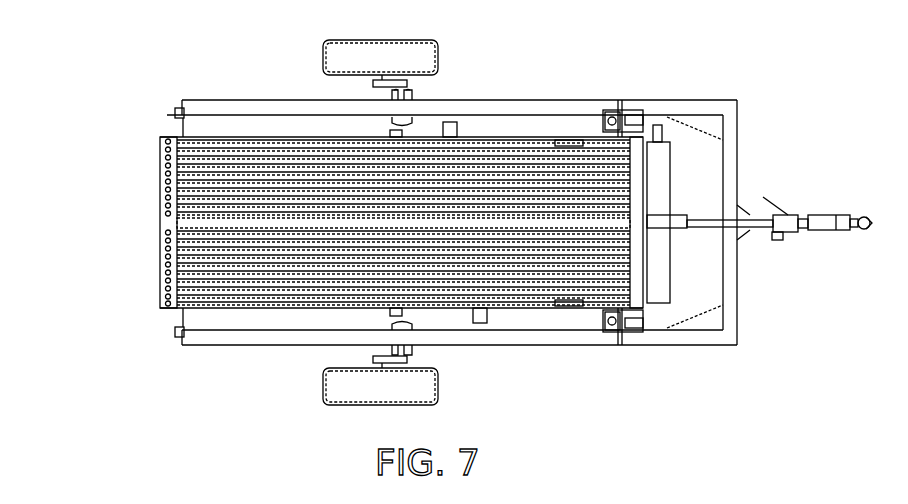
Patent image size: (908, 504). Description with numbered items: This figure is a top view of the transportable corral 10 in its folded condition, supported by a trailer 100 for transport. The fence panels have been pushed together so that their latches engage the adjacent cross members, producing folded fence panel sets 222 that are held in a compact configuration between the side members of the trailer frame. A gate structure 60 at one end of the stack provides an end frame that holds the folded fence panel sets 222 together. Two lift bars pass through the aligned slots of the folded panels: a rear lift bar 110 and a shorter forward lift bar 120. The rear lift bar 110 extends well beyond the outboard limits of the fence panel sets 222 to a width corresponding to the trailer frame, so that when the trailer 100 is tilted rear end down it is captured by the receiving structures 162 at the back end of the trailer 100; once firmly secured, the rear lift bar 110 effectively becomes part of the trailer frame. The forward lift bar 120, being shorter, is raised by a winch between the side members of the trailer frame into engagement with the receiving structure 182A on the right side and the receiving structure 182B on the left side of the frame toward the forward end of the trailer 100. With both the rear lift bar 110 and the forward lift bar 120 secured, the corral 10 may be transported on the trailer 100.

The corral 10 is at (496, 127).
The gate structure 60 is at (647, 192).
The trailer 100 is at (758, 322).
The rear lift bar 110 is at (170, 322).
The forward lift bar 120 is at (612, 114).
The receiving structures 162 is at (178, 109).
The receiving structure 182A is at (633, 336).
The receiving structure 182B is at (633, 120).
The fence panel set 222 is at (152, 165).